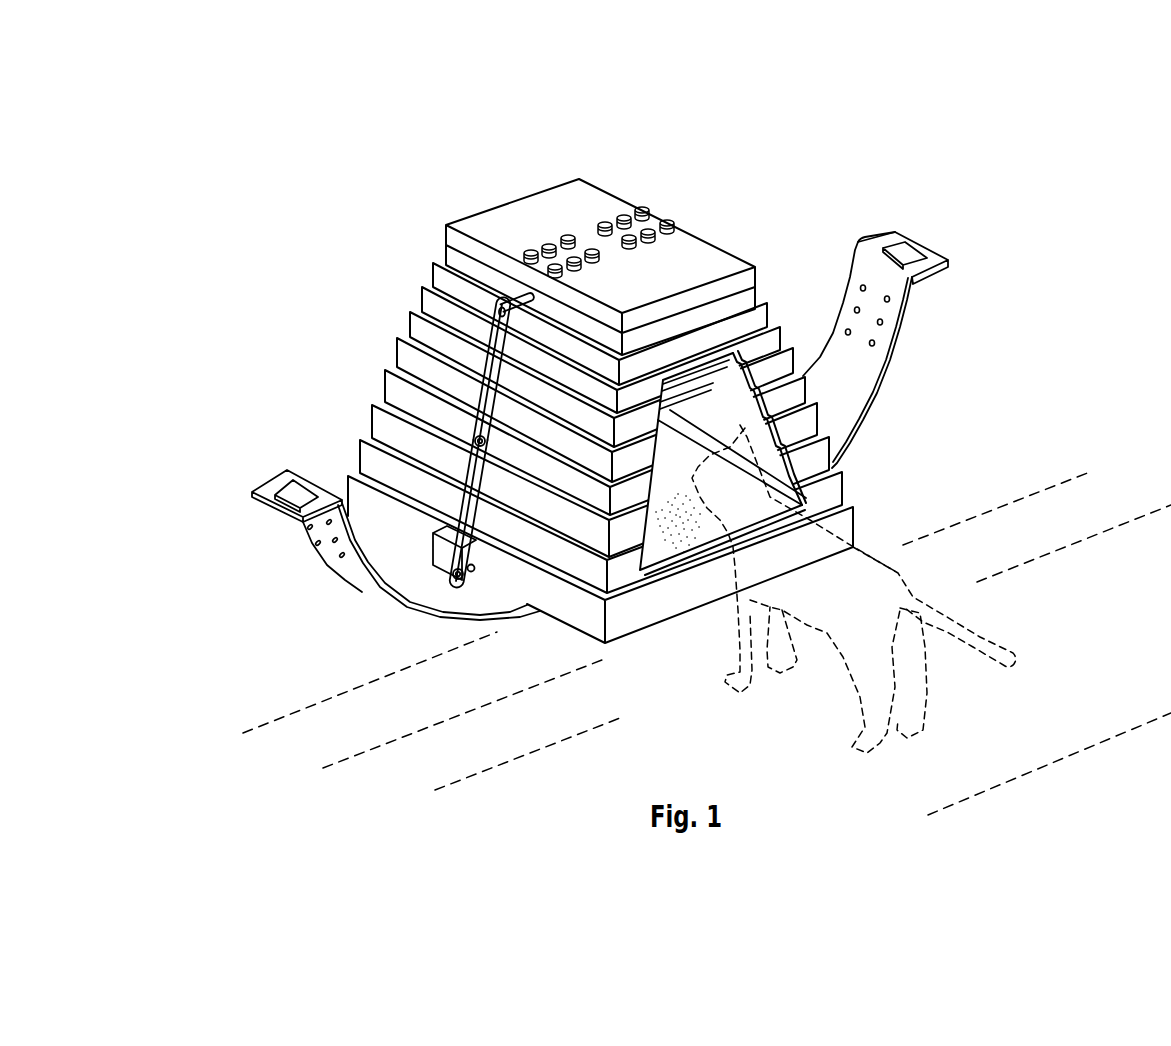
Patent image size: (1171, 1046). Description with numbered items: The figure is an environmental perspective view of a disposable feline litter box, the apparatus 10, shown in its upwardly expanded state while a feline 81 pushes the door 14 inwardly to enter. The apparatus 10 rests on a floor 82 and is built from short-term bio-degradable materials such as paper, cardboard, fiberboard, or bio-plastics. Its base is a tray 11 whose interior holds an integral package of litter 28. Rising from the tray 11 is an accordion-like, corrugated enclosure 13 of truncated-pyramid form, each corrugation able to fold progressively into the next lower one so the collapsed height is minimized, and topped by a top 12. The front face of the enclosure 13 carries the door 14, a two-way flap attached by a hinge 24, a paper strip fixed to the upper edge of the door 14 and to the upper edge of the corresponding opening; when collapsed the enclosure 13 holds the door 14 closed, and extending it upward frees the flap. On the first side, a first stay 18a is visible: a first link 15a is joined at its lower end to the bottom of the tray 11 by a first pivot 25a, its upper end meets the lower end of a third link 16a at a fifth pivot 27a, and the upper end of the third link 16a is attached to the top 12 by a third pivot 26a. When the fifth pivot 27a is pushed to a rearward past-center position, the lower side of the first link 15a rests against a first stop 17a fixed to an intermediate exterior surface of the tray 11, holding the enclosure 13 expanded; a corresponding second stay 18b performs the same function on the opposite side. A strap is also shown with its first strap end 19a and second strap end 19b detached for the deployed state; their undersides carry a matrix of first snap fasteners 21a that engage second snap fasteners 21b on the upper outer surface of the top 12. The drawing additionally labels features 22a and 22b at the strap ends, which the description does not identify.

The apparatus 10 is at (1049, 150).
The tray 11 is at (611, 646).
The top 12 is at (697, 253).
The enclosure 13 is at (812, 460).
The door 14 is at (710, 372).
The first link 15a is at (395, 408).
The third link 16a is at (493, 365).
The first stop 17a is at (437, 535).
The first stay 18a is at (489, 168).
The second stay 18b is at (743, 190).
The first strap end 19a is at (362, 575).
The second strap end 19b is at (867, 240).
The first snap fasteners 21a is at (342, 555).
The second snap fasteners 21b is at (667, 220).
The first mount plate 22a is at (285, 487).
The second mount plate 22b is at (920, 245).
The hinge 24 is at (733, 357).
The first pivot 25a is at (460, 577).
The third pivot 26a is at (497, 305).
The fifth pivot 27a is at (476, 438).
The litter 28 is at (682, 533).
The feline 81 is at (898, 575).
The floor 82 is at (1092, 747).